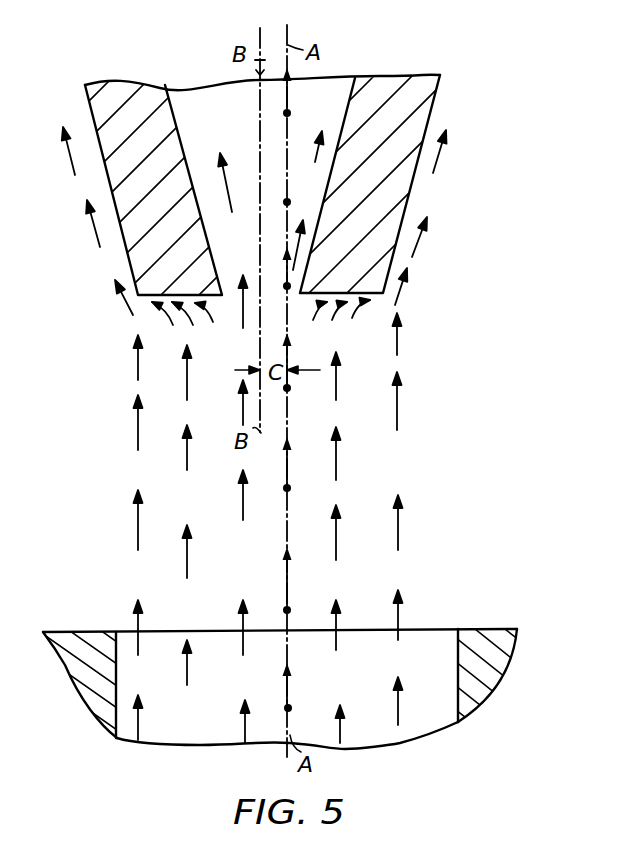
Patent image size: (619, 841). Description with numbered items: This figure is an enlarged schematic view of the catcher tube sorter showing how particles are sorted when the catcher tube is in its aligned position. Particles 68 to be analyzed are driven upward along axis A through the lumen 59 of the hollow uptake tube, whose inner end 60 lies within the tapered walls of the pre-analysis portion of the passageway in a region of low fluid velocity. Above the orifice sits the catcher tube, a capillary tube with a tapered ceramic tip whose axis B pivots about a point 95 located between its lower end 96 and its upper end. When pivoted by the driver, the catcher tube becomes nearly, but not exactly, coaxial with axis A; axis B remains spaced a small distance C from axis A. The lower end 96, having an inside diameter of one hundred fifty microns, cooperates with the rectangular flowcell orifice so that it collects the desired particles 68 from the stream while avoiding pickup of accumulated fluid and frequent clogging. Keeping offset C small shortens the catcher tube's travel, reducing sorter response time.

The lower end of the catcher tube 96 is at (437, 99).
The pivot point 95 is at (260, 30).
The particles 68 is at (287, 113).
The inner end of the uptake tube 60 is at (507, 668).
The lumen 59 is at (428, 715).